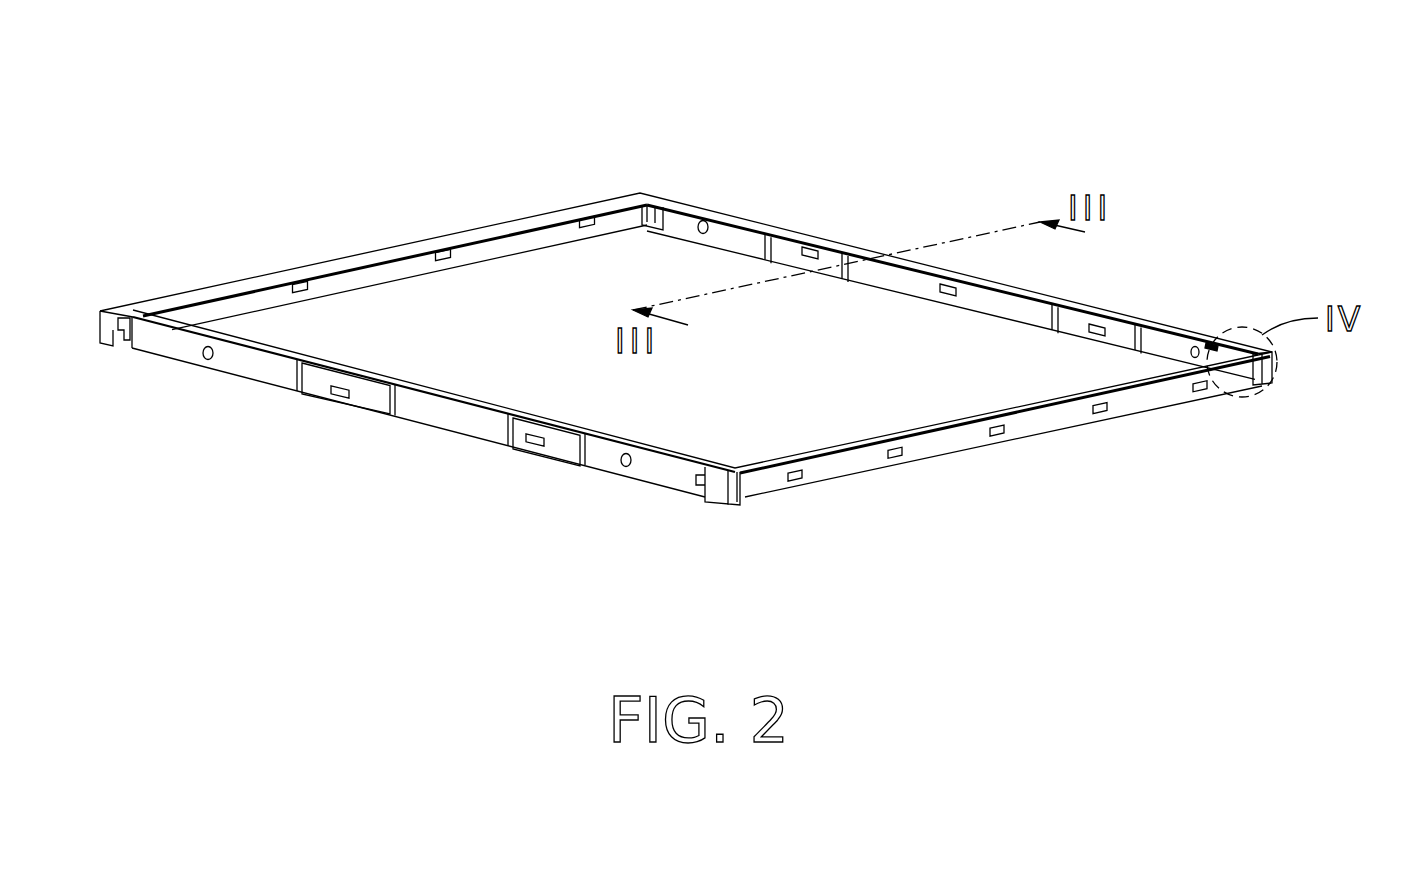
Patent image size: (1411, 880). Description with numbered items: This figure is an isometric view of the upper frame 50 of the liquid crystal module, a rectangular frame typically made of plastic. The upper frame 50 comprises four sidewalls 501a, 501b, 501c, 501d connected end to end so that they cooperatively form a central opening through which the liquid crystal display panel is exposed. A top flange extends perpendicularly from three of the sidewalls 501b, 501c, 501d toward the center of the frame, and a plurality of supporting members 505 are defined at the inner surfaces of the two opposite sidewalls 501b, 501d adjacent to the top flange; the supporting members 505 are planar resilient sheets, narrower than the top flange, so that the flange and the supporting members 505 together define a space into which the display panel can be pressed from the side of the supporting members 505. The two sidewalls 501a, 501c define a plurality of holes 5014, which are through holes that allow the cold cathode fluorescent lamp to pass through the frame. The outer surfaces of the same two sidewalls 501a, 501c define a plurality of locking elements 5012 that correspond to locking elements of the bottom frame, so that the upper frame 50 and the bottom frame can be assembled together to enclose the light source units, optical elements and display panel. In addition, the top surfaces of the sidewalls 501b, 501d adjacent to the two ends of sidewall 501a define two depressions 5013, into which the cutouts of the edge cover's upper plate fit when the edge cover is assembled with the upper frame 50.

The upper frame 50 is at (733, 326).
The sidewall 501a is at (1005, 450).
The sidewall 501b is at (993, 300).
The sidewall 501c is at (400, 268).
The sidewall 501d is at (445, 415).
The locking element 5012 is at (796, 481).
The depression 5013 is at (1265, 361).
The hole 5014 is at (126, 343).
The supporting member 505 is at (1212, 348).